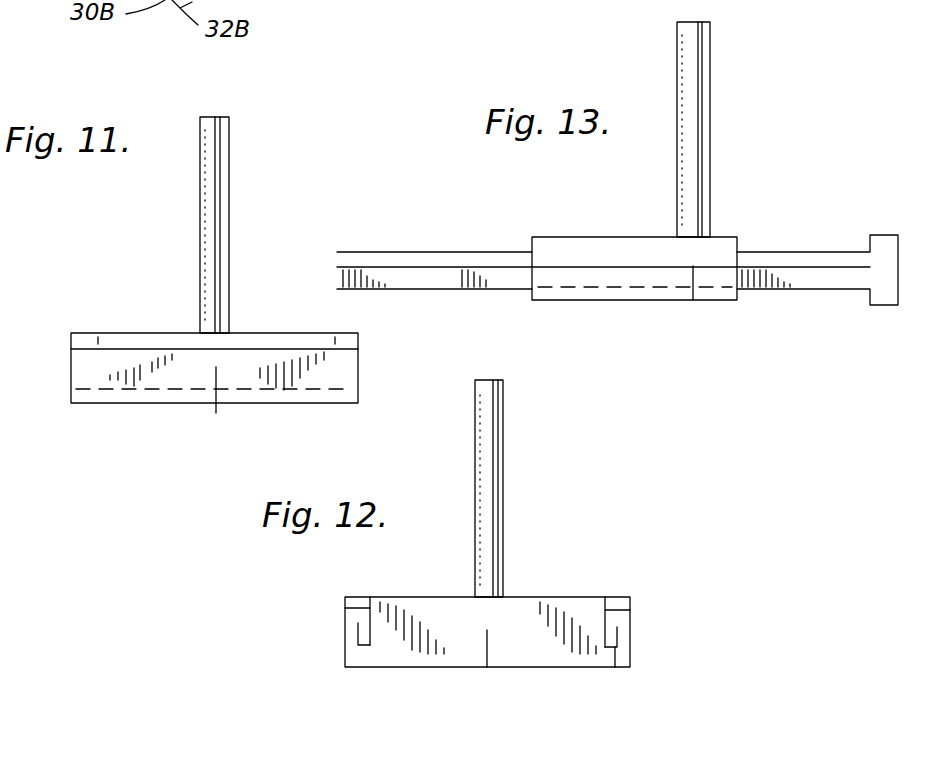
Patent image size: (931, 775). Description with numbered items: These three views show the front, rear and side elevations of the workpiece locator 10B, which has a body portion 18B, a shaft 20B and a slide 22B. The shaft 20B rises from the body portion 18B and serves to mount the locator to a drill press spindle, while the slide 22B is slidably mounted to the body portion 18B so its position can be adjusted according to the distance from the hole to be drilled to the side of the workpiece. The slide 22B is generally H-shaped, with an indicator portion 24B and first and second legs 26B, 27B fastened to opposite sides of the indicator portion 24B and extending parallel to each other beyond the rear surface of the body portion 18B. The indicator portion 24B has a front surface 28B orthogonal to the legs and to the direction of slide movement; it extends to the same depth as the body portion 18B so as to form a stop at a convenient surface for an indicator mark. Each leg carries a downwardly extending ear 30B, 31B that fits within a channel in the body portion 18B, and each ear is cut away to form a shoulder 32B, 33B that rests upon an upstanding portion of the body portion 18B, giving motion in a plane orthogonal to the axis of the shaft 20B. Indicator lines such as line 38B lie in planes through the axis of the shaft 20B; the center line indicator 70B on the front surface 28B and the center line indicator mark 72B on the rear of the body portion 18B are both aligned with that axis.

In FIG. 11, the workpiece locator 10B is at (135, 251).
In FIG. 13, the workpiece locator 10B is at (570, 188).
In FIG. 12, the workpiece locator 10B is at (625, 487).
In FIG. 11, the body portion 18B is at (298, 300).
In FIG. 13, the body portion 18B is at (578, 212).
In FIG. 12, the body portion 18B is at (563, 568).
In FIG. 11, the shaft 20B is at (210, 197).
In FIG. 13, the shaft 20B is at (710, 108).
In FIG. 12, the shaft 20B is at (497, 447).
In FIG. 13, the slide 22B is at (452, 233).
In FIG. 11, the indicator portion 24B is at (117, 322).
In FIG. 13, the indicator portion 24B is at (836, 243).
In FIG. 13, the first leg 26B is at (324, 222).
In FIG. 12, the first leg 26B is at (622, 606).
In FIG. 12, the second leg 27B is at (345, 599).
In FIG. 11, the front surface 28B is at (338, 397).
In FIG. 13, the front surface 28B is at (896, 302).
In FIG. 13, the downwardly extending ear 30B is at (337, 280).
In FIG. 12, the downwardly extending ear 30B is at (617, 660).
In FIG. 12, the downwardly extending ear 31B is at (357, 655).
In FIG. 13, the shoulder 32B is at (463, 268).
In FIG. 12, the shoulder 32B is at (625, 629).
In FIG. 12, the shoulder 33B is at (355, 627).
In FIG. 13, the indicator line 38B is at (693, 297).
In FIG. 11, the center line indicator 70B is at (217, 388).
In FIG. 12, the center line indicator mark 72B is at (488, 640).